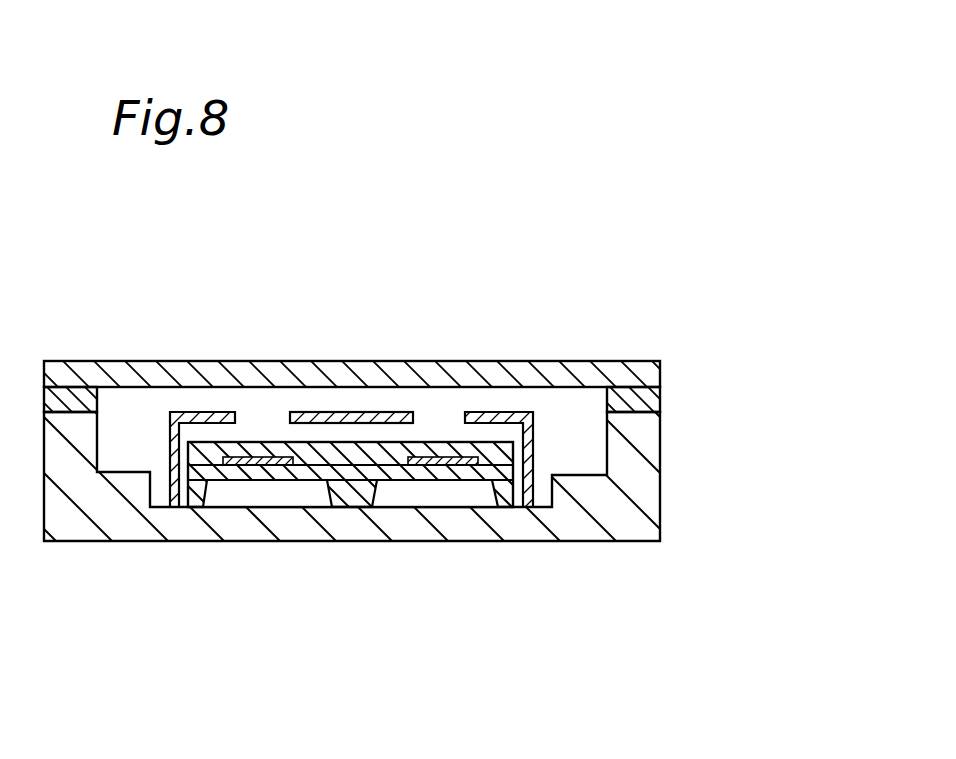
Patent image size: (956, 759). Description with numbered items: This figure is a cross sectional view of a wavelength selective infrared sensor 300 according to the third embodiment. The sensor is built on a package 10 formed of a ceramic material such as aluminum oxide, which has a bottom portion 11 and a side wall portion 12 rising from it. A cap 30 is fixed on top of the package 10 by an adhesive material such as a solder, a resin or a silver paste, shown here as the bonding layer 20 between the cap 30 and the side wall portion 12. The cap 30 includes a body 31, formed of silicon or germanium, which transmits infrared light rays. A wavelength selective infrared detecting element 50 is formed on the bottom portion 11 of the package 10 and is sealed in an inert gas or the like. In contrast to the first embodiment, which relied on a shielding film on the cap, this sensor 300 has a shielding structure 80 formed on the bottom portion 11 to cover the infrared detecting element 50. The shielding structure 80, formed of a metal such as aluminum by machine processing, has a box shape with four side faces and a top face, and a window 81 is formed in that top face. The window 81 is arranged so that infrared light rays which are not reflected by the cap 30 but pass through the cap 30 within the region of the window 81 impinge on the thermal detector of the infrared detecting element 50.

The wavelength selective infrared sensor 300 is at (248, 298).
The cap 30 is at (675, 373).
The body 31 is at (632, 368).
The bonding layer 20 is at (660, 393).
The package 10 is at (757, 512).
The bottom portion 11 is at (620, 543).
The side wall portion 12 is at (652, 455).
The window 81 is at (258, 412).
The shielding structure 80 is at (368, 412).
The wavelength selective infrared detecting element 50 is at (510, 547).